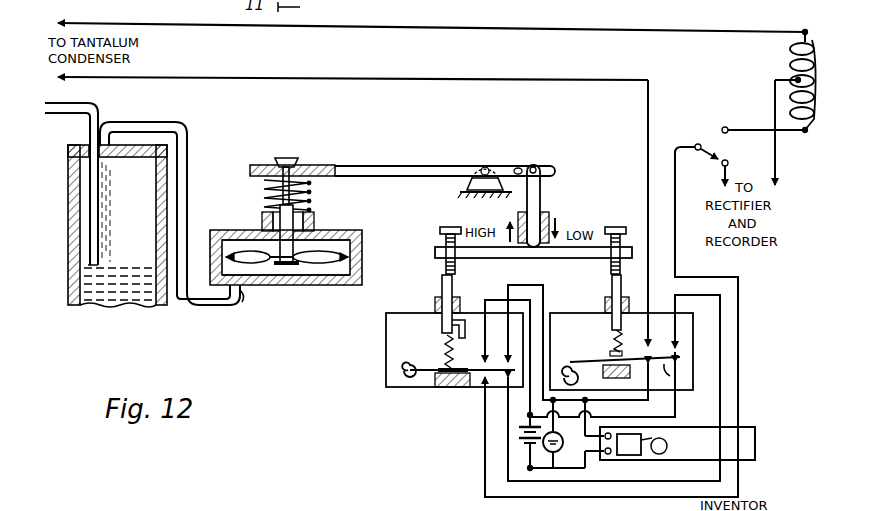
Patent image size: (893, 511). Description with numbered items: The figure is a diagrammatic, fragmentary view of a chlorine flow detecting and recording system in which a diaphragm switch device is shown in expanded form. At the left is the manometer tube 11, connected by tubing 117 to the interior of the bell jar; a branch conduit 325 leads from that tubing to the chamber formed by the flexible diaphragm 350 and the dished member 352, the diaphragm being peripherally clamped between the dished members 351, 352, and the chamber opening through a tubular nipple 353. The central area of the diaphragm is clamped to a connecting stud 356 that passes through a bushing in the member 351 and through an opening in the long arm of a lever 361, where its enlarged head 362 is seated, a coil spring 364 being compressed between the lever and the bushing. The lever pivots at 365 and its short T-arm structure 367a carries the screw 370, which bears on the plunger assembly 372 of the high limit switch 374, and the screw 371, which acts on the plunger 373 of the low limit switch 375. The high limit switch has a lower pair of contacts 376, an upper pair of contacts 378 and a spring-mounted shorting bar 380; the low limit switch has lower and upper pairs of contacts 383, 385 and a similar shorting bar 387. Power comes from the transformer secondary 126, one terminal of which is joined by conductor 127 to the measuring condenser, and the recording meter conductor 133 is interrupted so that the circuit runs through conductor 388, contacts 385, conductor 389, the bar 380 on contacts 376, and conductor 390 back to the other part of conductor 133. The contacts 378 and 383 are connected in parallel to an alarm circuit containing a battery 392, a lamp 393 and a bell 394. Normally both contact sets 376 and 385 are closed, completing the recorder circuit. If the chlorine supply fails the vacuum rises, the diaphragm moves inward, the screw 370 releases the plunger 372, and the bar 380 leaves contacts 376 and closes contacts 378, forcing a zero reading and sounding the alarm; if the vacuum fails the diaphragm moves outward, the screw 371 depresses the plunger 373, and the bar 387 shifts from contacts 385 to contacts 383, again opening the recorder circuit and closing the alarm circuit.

The manometer tube 11 is at (69, 219).
The tubing 117 is at (84, 94).
The conduit 325 is at (156, 120).
The conductor 127 is at (426, 29).
The conductor 133 is at (330, 77).
The secondary 126 is at (792, 49).
The conductor 388 is at (645, 107).
The enlarged head 362 is at (286, 156).
The lever 361 is at (378, 164).
The pivot 365 is at (487, 164).
The short T-arm structure 367a is at (541, 191).
The coil spring 364 is at (312, 192).
The connecting stud 356 is at (264, 223).
The dished member 351 is at (338, 232).
The flexible diaphragm 350 is at (364, 250).
The dished member 352 is at (318, 288).
The tubular nipple 353 is at (240, 304).
The screw 371 is at (617, 227).
The screw 370 is at (446, 258).
The plunger assembly 372 is at (441, 285).
The upper pair of contacts 378 is at (486, 330).
The plunger 373 is at (610, 287).
The high limit switch 374 is at (386, 346).
The shorting bar 380 is at (492, 378).
The lower pair of contacts 376 is at (505, 378).
The battery 392 is at (518, 432).
The lamp 393 is at (544, 450).
The upper pair of contacts 385 is at (655, 350).
The shorting bar 387 is at (680, 353).
The low limit switch 375 is at (695, 362).
The lower pair of contacts 383 is at (690, 376).
The conductor 389 is at (722, 415).
The conductor 390 is at (740, 440).
The bell 394 is at (757, 447).